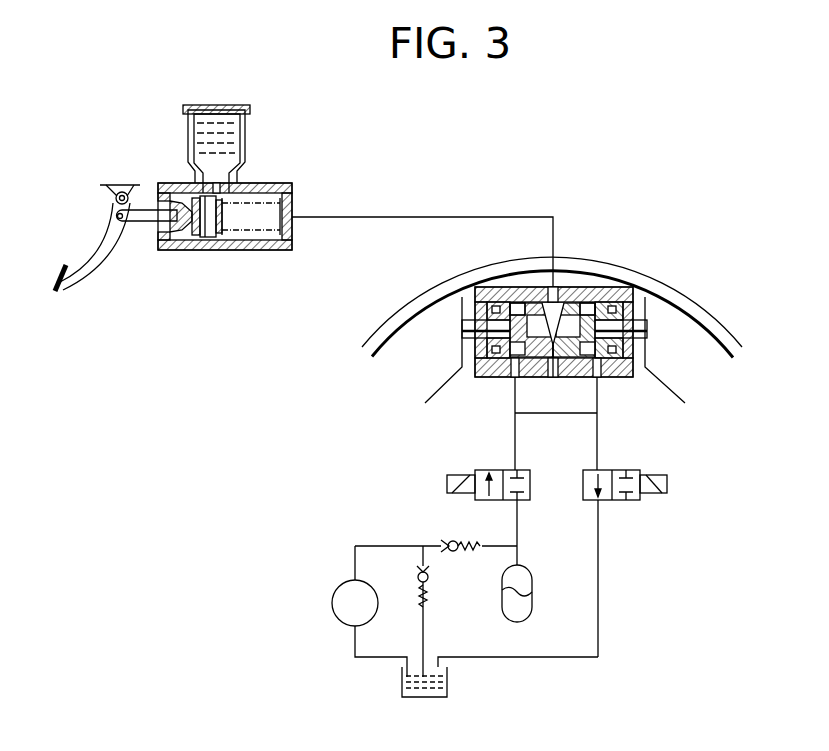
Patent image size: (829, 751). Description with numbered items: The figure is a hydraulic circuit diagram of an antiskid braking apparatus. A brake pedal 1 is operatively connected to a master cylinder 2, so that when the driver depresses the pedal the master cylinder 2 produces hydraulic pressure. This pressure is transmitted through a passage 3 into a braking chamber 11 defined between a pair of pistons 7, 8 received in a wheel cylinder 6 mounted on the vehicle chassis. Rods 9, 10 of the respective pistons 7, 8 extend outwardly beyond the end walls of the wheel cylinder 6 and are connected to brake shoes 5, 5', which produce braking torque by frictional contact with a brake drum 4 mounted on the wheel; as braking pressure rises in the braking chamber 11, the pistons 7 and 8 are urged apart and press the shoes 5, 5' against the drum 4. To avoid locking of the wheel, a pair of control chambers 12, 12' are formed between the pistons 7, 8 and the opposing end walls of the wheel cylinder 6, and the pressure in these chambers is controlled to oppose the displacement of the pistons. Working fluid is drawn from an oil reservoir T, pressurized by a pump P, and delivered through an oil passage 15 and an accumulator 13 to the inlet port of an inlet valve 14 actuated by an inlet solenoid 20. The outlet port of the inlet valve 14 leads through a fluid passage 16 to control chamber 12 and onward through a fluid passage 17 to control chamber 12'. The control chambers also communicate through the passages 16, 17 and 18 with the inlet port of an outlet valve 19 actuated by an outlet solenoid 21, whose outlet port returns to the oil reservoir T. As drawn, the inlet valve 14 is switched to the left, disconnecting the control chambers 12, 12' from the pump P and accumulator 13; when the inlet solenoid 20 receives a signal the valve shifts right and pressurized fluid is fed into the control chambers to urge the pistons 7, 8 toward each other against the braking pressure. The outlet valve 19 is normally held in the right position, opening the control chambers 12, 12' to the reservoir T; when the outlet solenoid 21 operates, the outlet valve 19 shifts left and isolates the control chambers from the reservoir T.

The brake pedal 1 is at (61, 272).
The master cylinder 2 is at (228, 252).
The passage 3 is at (416, 217).
The brake drum 4 is at (429, 293).
The brake shoe 5 is at (443, 361).
The brake shoe 5' is at (664, 358).
The wheel cylinder 6 is at (617, 277).
The piston 7 is at (531, 330).
The piston 8 is at (568, 330).
The rod 9 is at (473, 337).
The rod 10 is at (633, 330).
The braking chamber 11 is at (553, 377).
The control chamber 12 is at (519, 271).
The control chamber 12' is at (590, 270).
The accumulator 13 is at (532, 590).
The inlet valve 14 is at (497, 473).
The oil passage 15 is at (390, 546).
The fluid passage 16 is at (517, 452).
The fluid passage 17 is at (565, 413).
The passage 18 is at (598, 420).
The outlet valve 19 is at (621, 471).
The inlet solenoid 20 is at (448, 481).
The outlet solenoid 21 is at (666, 475).
The pump P is at (332, 605).
The oil reservoir T is at (447, 681).